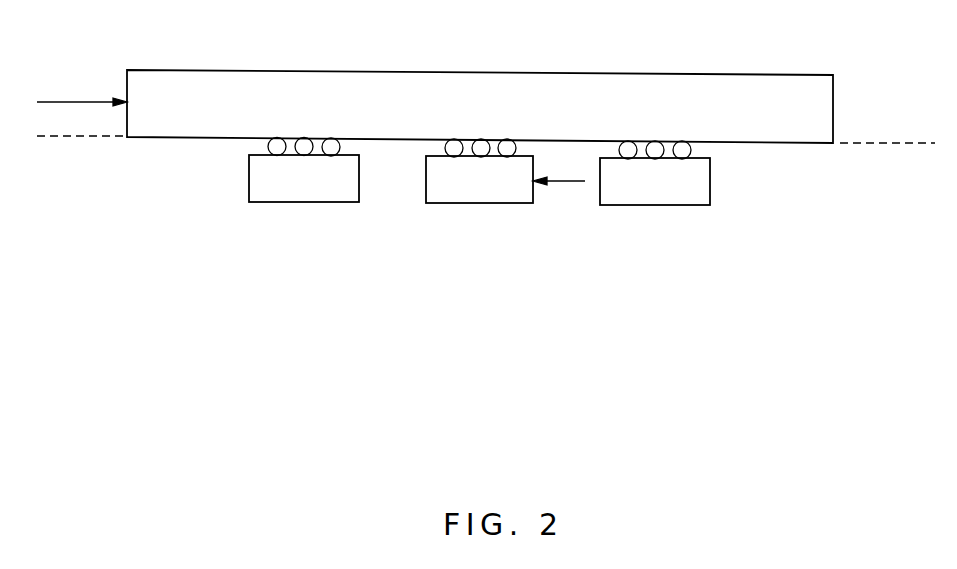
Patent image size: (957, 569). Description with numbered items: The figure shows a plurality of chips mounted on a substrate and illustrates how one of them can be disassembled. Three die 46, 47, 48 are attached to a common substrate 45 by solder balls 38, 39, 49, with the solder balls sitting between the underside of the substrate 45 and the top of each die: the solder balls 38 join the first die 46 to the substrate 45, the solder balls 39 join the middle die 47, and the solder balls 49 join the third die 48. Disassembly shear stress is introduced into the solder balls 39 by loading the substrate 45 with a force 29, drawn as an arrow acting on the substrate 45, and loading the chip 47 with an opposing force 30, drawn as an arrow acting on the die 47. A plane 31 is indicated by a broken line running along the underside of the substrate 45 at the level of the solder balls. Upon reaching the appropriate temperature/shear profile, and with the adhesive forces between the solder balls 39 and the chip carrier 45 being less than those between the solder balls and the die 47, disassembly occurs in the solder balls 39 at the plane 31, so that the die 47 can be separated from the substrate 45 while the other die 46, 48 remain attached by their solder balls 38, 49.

The force 29 is at (98, 102).
The force 30 is at (568, 180).
The plane 31 is at (50, 137).
The solder balls 38 is at (337, 143).
The solder balls 39 is at (512, 145).
The substrate 45 is at (728, 95).
The die 46 is at (327, 192).
The die 47 is at (488, 192).
The die 48 is at (677, 197).
The solder balls 49 is at (690, 147).